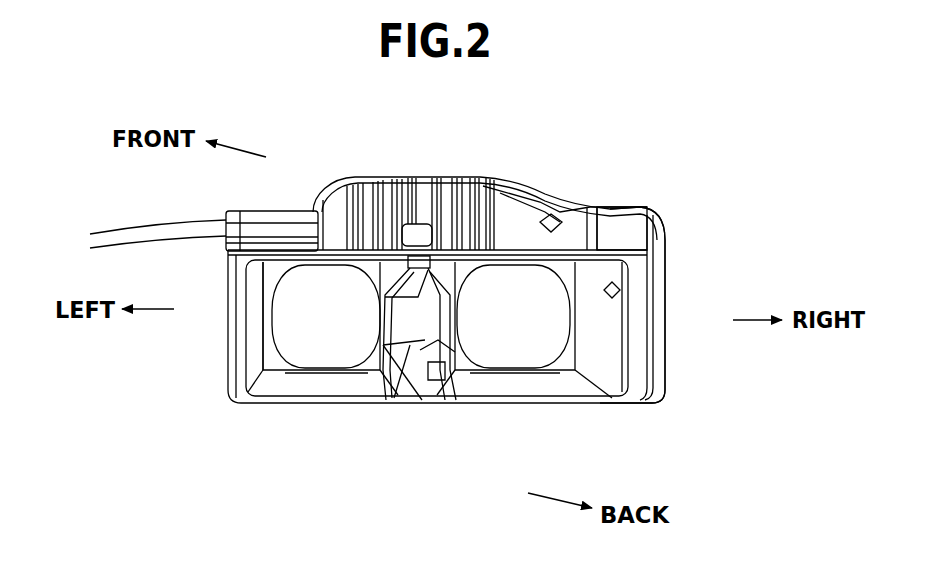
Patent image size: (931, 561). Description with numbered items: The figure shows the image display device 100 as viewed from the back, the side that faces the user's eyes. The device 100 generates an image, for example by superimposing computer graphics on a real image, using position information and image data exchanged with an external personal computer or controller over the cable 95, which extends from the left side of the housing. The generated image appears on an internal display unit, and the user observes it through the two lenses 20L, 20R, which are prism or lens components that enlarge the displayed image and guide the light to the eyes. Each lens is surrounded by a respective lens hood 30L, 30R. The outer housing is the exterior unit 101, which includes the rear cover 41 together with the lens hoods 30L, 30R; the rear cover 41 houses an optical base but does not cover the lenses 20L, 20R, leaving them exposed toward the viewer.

The image display device 100 is at (643, 133).
The exterior unit 101 is at (668, 211).
The rear cover 41 is at (622, 242).
The cable 95 is at (292, 215).
The lens 20L is at (322, 343).
The lens 20R is at (512, 343).
The lens hood 30L is at (340, 392).
The lens hood 30R is at (535, 388).